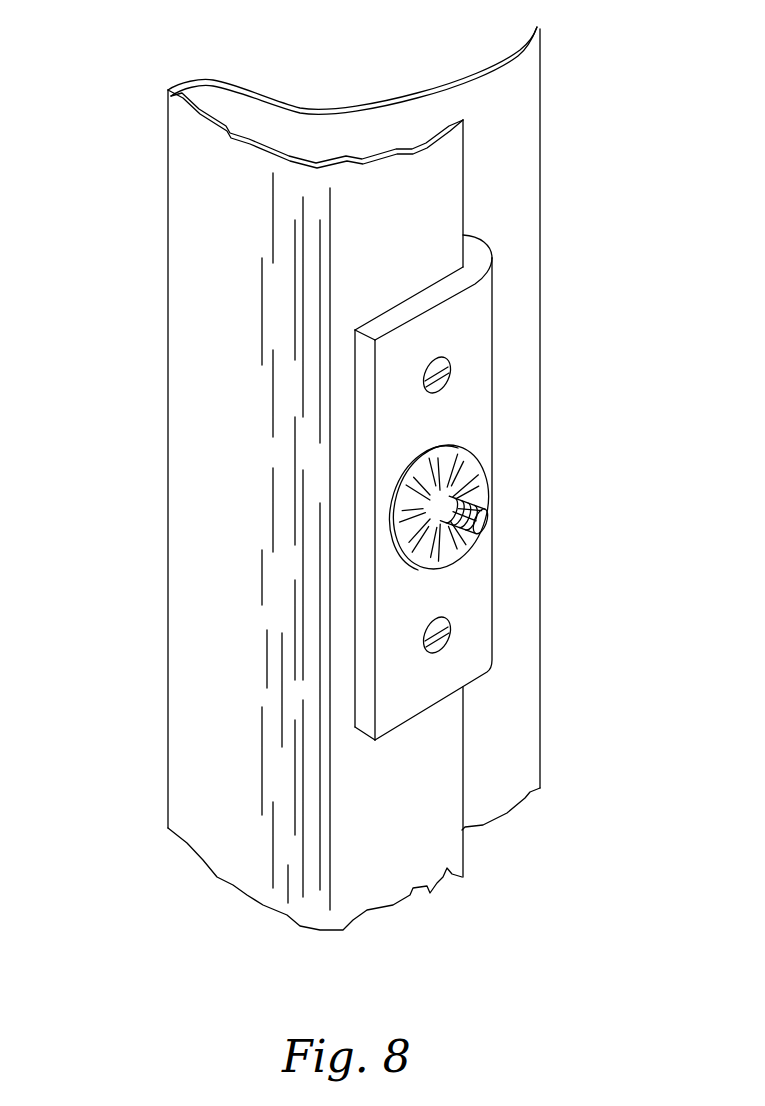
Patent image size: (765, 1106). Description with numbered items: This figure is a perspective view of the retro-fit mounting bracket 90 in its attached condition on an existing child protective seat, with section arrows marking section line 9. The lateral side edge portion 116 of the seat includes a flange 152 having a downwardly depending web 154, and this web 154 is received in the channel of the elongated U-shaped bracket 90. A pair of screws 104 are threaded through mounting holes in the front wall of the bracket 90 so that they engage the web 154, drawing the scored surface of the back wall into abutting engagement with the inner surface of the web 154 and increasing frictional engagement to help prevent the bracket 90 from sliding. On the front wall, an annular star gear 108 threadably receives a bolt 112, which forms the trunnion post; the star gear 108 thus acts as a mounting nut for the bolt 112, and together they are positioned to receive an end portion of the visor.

The section line 9- 9 is at (147, 330).
The mounting bracket 90 is at (480, 297).
The screws 104 is at (448, 368).
The annular star gear 108 is at (417, 463).
The bolt 112 is at (493, 478).
The lateral side edge portion 116 is at (488, 800).
The flange 152 is at (242, 862).
The web 154 is at (370, 882).